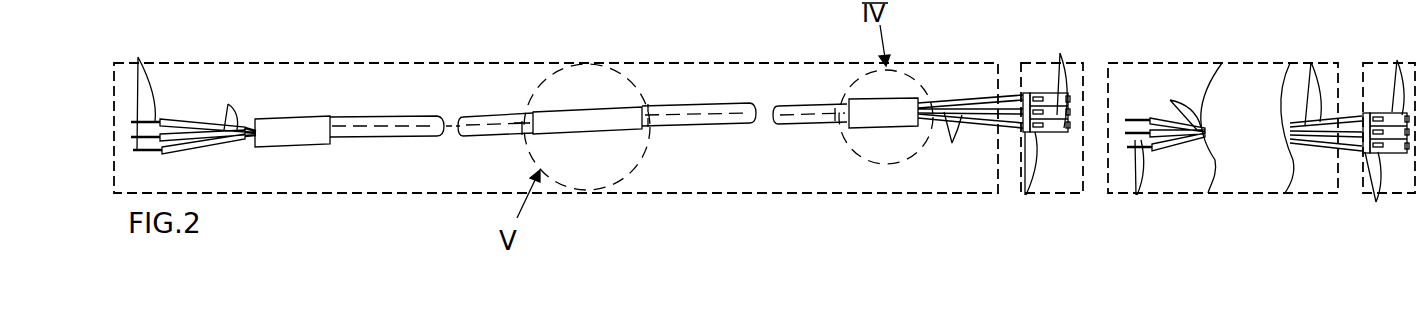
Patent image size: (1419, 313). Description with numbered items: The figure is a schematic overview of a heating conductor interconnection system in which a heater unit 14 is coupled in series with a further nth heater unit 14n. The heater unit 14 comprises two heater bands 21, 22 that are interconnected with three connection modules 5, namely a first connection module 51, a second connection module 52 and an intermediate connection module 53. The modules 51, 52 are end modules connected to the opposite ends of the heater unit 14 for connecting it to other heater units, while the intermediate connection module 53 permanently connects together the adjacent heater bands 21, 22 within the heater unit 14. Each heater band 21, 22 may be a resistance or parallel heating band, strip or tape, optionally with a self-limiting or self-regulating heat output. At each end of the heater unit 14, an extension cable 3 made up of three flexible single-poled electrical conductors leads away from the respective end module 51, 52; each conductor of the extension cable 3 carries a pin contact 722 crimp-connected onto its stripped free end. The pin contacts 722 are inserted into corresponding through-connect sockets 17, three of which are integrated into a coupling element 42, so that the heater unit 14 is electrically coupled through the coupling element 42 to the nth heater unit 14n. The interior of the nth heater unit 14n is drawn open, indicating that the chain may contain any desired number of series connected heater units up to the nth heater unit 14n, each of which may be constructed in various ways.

The heater unit 14 is at (311, 63).
The nth heater unit 14n is at (1221, 63).
The extension cable 3 is at (746, 104).
The pin contact 722 is at (761, 129).
The connection module 5 is at (326, 147).
The first connection module 51 is at (275, 130).
The second connection module 52 is at (879, 115).
The intermediate connection module 53 is at (588, 116).
The heater band 21 is at (381, 121).
The heater band 22 is at (670, 110).
The through-connect socket 17 is at (1219, 90).
The coupling element 42 is at (1353, 30).